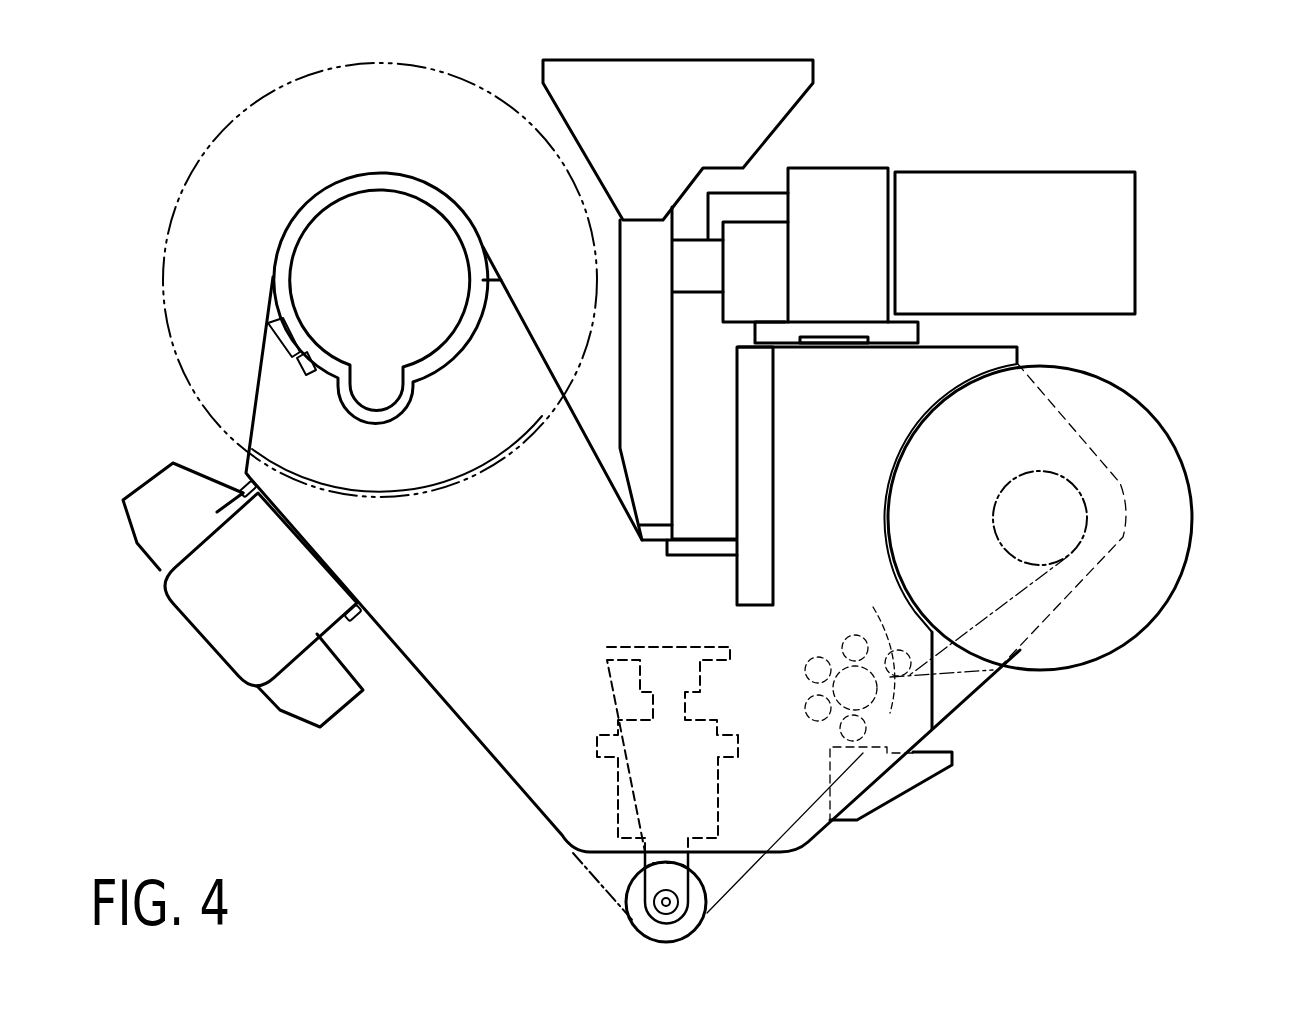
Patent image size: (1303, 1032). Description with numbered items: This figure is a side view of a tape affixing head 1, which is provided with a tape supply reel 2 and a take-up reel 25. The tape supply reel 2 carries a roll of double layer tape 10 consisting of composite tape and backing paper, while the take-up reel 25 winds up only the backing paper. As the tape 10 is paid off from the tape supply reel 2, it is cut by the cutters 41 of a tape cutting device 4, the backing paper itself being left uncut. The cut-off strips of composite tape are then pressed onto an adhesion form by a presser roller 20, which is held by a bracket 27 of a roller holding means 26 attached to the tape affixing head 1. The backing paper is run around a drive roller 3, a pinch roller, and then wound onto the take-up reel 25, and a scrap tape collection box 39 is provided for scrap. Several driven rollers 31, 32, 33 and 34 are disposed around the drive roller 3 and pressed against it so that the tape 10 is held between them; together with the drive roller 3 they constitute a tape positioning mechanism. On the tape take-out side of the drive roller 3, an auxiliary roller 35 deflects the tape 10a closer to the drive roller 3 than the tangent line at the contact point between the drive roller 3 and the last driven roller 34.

The tape affixing head 1 is at (478, 738).
The tape supply reel 2 is at (177, 253).
The drive roller 3 is at (875, 672).
The tape cutting device 4 is at (172, 628).
The double layer tape 10 is at (590, 878).
The tape 10a is at (735, 888).
The presser roller 20 is at (640, 903).
The take-up reel 25 is at (1145, 405).
The roller holding means 26 is at (614, 783).
The bracket 27 is at (693, 897).
The driven roller 31 is at (836, 735).
The driven roller 32 is at (802, 707).
The driven roller 33 is at (816, 652).
The last driven roller 34 is at (866, 636).
The auxiliary roller 35 is at (908, 649).
The scrap tape collection box 39 is at (942, 775).
The cutter 41 is at (240, 484).